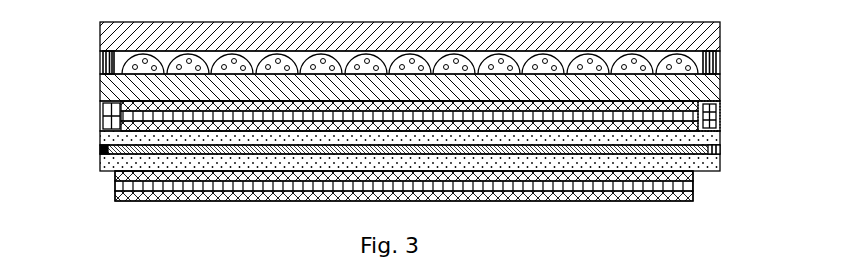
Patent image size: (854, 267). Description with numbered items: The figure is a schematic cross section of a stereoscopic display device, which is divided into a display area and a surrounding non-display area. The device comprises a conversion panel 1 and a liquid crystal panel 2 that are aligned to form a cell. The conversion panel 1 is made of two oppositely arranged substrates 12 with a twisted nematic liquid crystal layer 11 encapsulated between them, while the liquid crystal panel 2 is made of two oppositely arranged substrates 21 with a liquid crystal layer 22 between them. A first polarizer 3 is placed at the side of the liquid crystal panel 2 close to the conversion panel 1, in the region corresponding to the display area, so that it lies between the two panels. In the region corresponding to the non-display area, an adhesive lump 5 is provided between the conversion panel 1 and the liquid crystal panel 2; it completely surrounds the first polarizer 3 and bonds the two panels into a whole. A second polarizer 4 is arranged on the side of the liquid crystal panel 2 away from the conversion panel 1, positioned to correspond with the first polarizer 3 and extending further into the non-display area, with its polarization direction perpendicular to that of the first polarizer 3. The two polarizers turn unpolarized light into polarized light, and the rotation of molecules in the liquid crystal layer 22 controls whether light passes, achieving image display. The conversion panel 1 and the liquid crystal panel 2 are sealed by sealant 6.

The conversion panel 1 is at (722, 15).
The liquid crystal panel 2 is at (722, 123).
The first polarizer 3 is at (712, 107).
The second polarizer 4 is at (690, 163).
The adhesive lump 5 is at (92, 104).
The sealant 6 is at (95, 50).
The twisted nematic liquid crystal layer 11 is at (92, 62).
The substrate 12 is at (92, 29).
The substrate 21 is at (92, 129).
The liquid crystal layer 22 is at (92, 143).